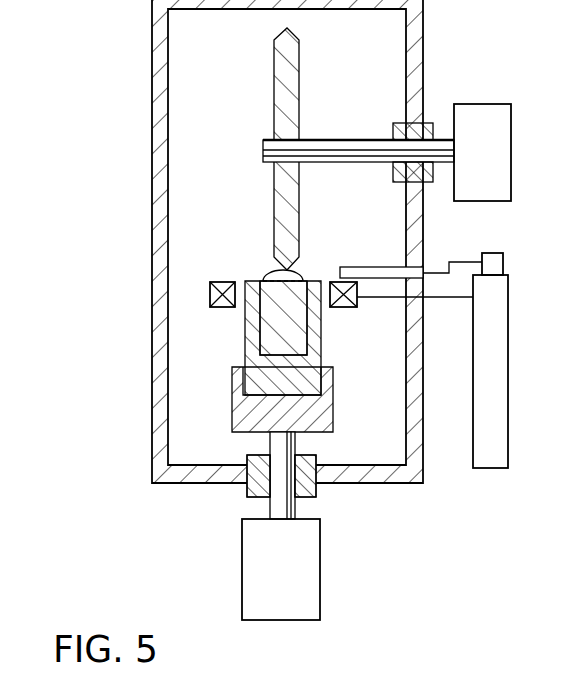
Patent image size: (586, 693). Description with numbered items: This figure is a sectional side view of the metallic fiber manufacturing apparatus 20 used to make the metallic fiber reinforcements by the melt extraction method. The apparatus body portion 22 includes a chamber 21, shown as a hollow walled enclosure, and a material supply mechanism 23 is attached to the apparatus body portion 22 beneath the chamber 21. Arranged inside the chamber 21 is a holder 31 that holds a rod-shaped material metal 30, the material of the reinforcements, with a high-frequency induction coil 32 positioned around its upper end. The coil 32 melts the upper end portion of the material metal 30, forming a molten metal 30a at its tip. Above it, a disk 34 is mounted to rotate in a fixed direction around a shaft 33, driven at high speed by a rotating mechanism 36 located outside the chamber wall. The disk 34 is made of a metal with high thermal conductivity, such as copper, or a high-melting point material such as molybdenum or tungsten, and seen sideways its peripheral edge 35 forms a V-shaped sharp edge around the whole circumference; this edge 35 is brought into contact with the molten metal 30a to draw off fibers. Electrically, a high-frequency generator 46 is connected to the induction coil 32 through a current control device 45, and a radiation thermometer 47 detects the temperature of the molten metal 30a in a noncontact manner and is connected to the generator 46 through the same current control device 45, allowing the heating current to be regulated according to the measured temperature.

The metallic fiber manufacturing apparatus 20 is at (273, 241).
The chamber 21 is at (152, 176).
The apparatus body portion 22 is at (440, 26).
The material supply mechanism 23 is at (224, 543).
The material metal 30 is at (265, 338).
The molten metal 30a is at (270, 273).
The holder 31 is at (322, 352).
The high-frequency induction coil 32 is at (210, 295).
The shaft 33 is at (263, 148).
The disk 34 is at (299, 77).
The peripheral edge 35 is at (295, 271).
The rotating mechanism 36 is at (511, 155).
The current control device 45 is at (503, 265).
The high-frequency generator 46 is at (508, 365).
The radiation thermometer 47 is at (374, 267).